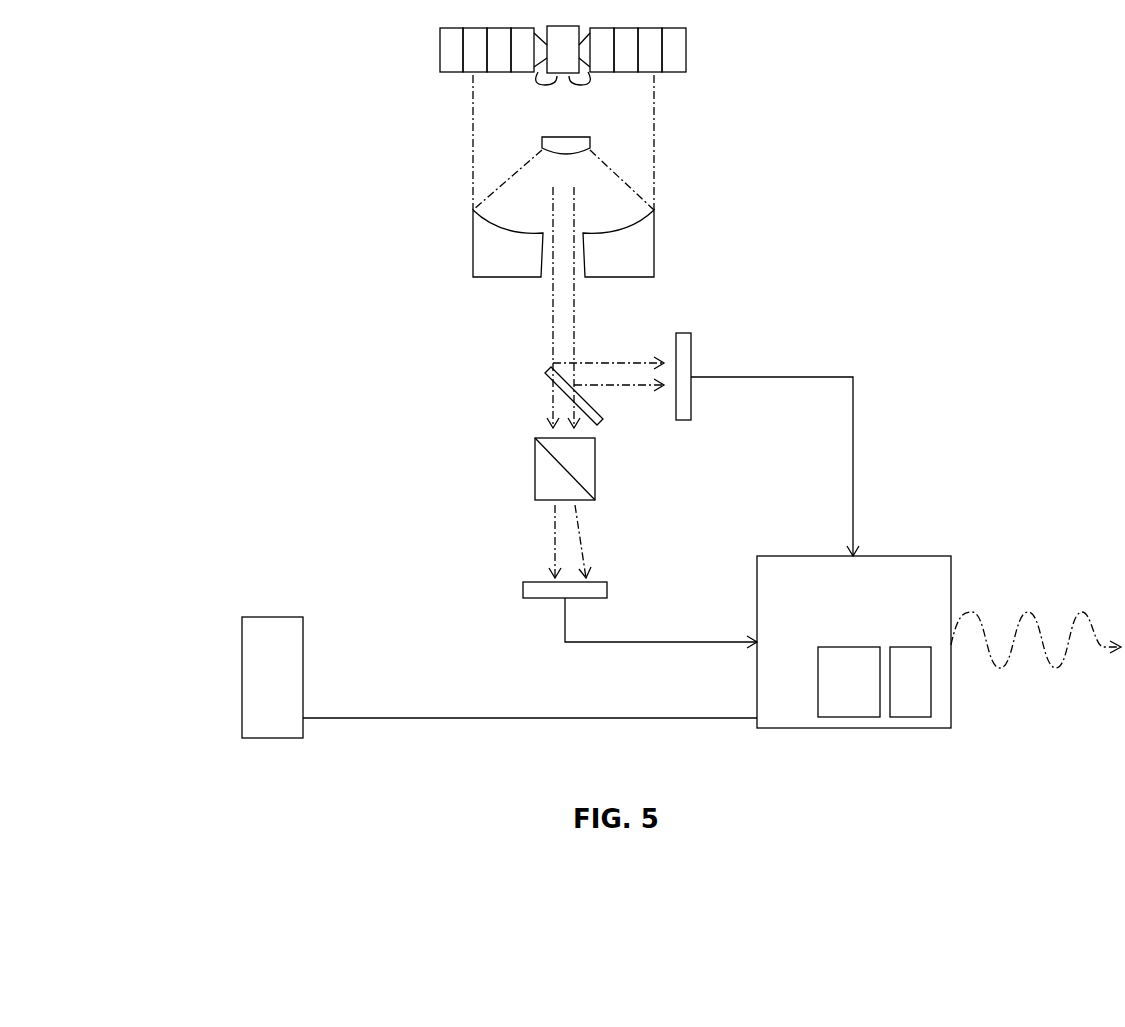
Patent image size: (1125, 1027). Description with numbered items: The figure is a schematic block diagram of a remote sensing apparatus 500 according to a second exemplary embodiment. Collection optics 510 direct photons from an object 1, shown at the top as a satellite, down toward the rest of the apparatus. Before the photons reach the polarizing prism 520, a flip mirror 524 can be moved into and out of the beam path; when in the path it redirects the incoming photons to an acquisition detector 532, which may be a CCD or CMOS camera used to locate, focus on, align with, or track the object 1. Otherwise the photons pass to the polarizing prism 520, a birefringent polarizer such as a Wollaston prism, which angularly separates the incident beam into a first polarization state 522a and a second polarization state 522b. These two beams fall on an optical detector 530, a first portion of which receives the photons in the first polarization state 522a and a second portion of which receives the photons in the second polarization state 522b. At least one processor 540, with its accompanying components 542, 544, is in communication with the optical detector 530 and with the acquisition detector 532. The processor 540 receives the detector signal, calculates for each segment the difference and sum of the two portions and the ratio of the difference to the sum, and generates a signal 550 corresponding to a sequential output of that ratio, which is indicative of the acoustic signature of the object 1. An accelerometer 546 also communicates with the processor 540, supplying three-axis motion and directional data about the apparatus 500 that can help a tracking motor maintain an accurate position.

The object 1 is at (686, 50).
The remote sensing apparatus 500 is at (898, 263).
The collection optics 510 is at (452, 212).
The polarizing prism 520 is at (535, 468).
The first polarization state 522a is at (555, 537).
The second polarization state 522b is at (583, 547).
The flip mirror 524 is at (546, 372).
The optical detector 530 is at (523, 588).
The acquisition detector 532 is at (688, 352).
The processor 540 is at (798, 718).
The processor component 542 is at (848, 718).
The processor component 544 is at (912, 718).
The accelerometer 546 is at (273, 617).
The signal 550 is at (1028, 608).